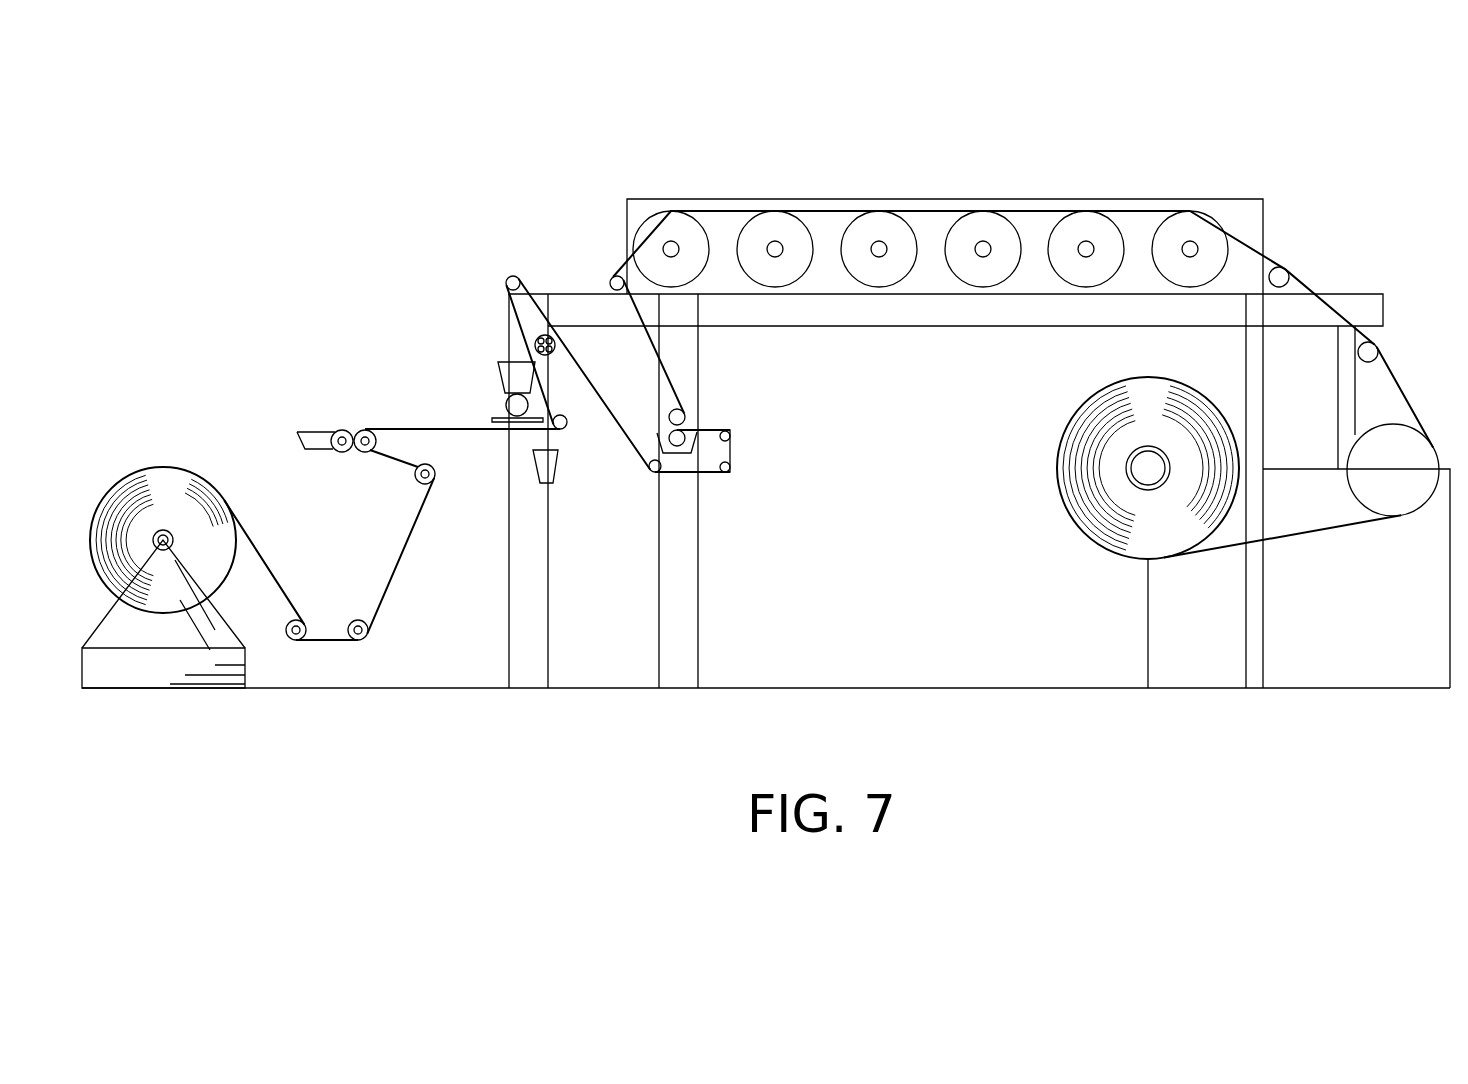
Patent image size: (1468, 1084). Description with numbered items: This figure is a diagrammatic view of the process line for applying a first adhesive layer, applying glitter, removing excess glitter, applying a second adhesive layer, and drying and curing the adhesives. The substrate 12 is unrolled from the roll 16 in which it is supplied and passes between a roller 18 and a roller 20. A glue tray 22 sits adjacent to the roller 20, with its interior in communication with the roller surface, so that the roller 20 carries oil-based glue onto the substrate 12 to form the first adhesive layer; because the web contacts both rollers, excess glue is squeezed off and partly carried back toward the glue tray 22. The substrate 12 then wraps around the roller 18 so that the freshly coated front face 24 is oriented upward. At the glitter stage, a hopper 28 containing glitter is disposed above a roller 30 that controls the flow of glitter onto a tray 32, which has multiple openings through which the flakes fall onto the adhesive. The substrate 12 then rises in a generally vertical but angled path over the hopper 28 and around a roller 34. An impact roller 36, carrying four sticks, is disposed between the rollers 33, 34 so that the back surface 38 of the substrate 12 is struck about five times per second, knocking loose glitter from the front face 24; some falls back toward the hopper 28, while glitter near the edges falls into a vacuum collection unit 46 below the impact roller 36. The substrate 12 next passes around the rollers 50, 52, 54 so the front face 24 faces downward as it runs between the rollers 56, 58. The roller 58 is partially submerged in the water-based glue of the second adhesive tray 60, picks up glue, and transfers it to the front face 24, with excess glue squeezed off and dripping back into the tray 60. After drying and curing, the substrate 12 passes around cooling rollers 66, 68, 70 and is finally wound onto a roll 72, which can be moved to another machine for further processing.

The substrate 12 is at (408, 552).
The roll 16 is at (177, 487).
The roller 18 is at (366, 432).
The roller 20 is at (342, 452).
The glue tray 22 is at (310, 432).
The front face 24 is at (392, 352).
The hopper 28 is at (520, 360).
The roller 30 is at (505, 403).
The tray 32 is at (492, 420).
The roller 33 is at (557, 437).
The roller 34 is at (510, 277).
The impact roller 36 is at (555, 353).
The back surface 38 is at (1305, 500).
The vacuum collection unit 46 is at (558, 463).
The roller 50 is at (650, 473).
The roller 52 is at (730, 467).
The roller 54 is at (730, 433).
The roller 56 is at (680, 410).
The roller 58 is at (653, 442).
The second adhesive tray 60 is at (682, 472).
The cooling roller 66 is at (1278, 275).
The cooling roller 68 is at (1358, 352).
The cooling roller 70 is at (1410, 487).
The roll 72 is at (1117, 530).